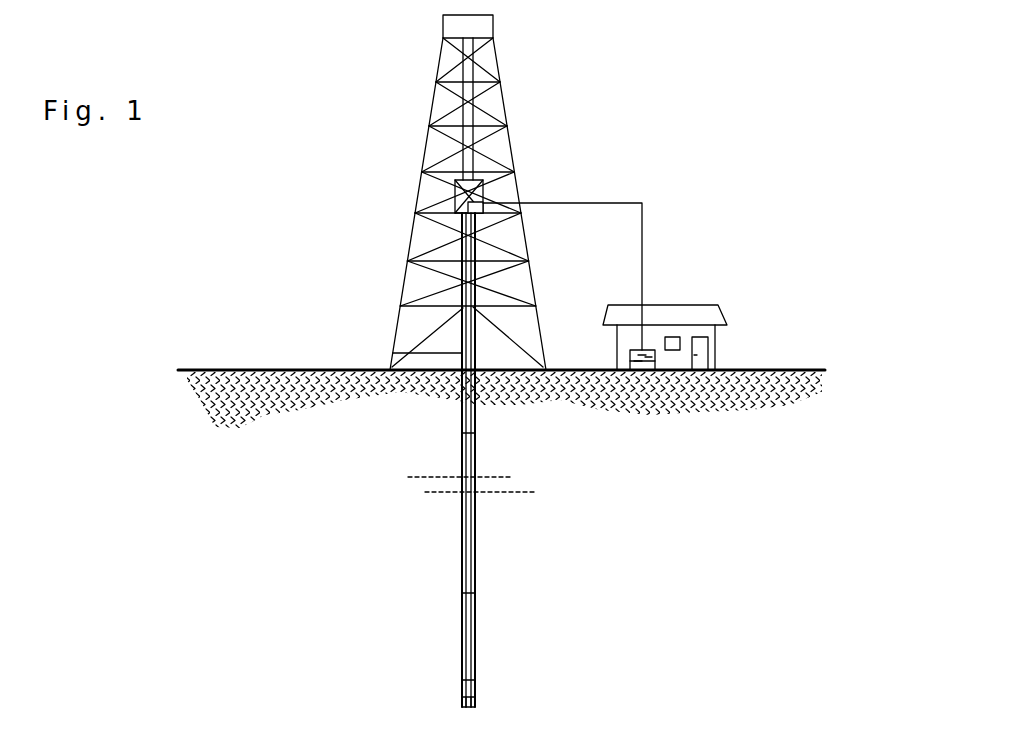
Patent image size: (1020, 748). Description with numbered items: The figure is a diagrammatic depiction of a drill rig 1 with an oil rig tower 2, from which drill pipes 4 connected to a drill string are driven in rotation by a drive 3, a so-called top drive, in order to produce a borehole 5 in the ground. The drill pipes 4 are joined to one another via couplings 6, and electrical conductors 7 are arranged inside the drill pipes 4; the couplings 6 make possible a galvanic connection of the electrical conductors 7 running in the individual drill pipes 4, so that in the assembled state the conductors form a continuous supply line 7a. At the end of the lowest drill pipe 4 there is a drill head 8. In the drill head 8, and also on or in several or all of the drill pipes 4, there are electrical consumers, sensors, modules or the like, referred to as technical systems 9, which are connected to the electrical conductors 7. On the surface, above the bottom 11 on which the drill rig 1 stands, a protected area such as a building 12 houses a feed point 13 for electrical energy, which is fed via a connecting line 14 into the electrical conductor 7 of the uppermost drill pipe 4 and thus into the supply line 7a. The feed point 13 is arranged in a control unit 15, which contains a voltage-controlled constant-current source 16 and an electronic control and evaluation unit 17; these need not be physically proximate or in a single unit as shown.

The drill rig 1 is at (555, 115).
The oil rig tower 2 is at (410, 248).
The drive 3 is at (455, 185).
The supply line 7a is at (457, 207).
The drill pipes 4 is at (463, 333).
The borehole 5 is at (460, 538).
The couplings 6 is at (463, 283).
The electrical conductors 7 is at (463, 358).
The drill head 8 is at (460, 697).
The technical systems 9 is at (476, 437).
The bottom 11 is at (305, 370).
The building 12 is at (687, 328).
The feed point 13 is at (643, 347).
The connecting line 14 is at (642, 228).
The control unit 15 is at (647, 357).
The voltage-controlled constant-current source 16 is at (642, 355).
The electronic control and evaluation unit 17 is at (640, 360).